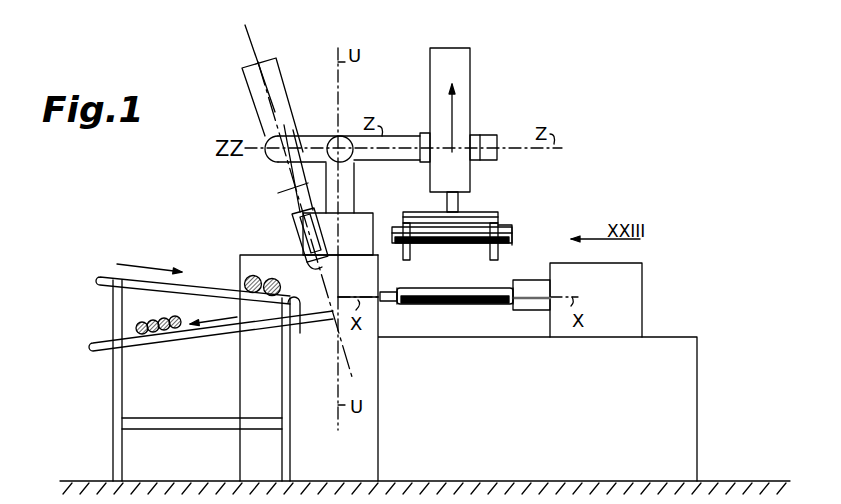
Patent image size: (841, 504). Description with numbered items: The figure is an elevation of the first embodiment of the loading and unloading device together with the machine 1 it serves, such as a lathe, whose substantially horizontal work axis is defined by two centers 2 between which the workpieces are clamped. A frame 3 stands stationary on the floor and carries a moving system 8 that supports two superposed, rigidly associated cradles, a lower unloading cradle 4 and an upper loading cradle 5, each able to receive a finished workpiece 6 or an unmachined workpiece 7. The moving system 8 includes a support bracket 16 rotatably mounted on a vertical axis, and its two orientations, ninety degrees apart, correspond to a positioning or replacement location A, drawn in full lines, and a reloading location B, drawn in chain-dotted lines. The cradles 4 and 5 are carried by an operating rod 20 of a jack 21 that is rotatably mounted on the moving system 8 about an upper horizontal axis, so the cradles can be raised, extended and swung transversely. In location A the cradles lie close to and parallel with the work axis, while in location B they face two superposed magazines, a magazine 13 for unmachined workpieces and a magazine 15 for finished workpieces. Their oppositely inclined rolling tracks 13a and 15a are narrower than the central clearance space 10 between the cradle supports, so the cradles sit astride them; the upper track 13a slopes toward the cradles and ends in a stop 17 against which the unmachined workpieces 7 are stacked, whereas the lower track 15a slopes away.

The machine 1 is at (666, 380).
The centers 2 is at (399, 289).
The frame 3 is at (372, 212).
The lower unloading cradle 4 is at (312, 266).
The upper loading cradle 5 is at (298, 232).
The finished workpiece 6 is at (440, 296).
The unmachined workpiece 7 is at (466, 236).
The moving system 8 is at (347, 139).
The central clearance space 10 is at (448, 246).
The magazine for unmachined workpieces 13 is at (223, 279).
The rolling track 13a is at (192, 284).
The magazine for finished workpieces 15 is at (168, 342).
The rolling track 15a is at (207, 334).
The support bracket 16 is at (391, 160).
The stop 17 is at (299, 333).
The operating rod 20 is at (467, 201).
The jack 21 is at (470, 100).
The positioning or replacement location A is at (488, 73).
The reloading location B is at (290, 86).